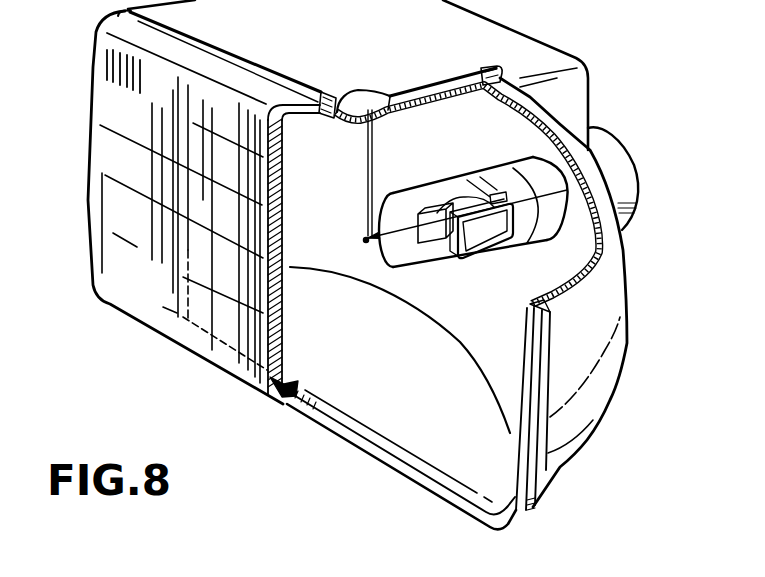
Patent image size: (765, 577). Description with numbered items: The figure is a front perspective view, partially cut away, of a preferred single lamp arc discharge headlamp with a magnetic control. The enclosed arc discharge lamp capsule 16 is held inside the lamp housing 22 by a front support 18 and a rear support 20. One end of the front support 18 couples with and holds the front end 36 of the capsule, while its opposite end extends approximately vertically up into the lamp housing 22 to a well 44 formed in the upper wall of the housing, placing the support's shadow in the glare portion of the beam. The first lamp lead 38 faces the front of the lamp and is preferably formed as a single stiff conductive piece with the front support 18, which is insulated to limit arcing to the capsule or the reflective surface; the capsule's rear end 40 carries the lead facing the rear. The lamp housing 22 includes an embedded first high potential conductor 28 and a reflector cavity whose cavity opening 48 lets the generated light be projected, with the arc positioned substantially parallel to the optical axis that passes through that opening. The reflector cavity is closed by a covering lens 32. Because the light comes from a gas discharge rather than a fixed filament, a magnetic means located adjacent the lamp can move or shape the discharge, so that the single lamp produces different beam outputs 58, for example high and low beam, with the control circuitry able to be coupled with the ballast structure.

The arc discharge lamp capsule 16 is at (452, 176).
The front support 18 is at (367, 165).
The rear support 20 is at (528, 158).
The lamp housing 22 is at (586, 426).
The first high potential conductor 28 is at (427, 80).
The covering lens 32 is at (148, 298).
The front end 36 is at (384, 262).
The first lamp lead 38 is at (406, 228).
The rear end 40 is at (487, 162).
The well 44 is at (362, 99).
The cavity opening 48 is at (331, 389).
The beam outputs 58 is at (470, 262).